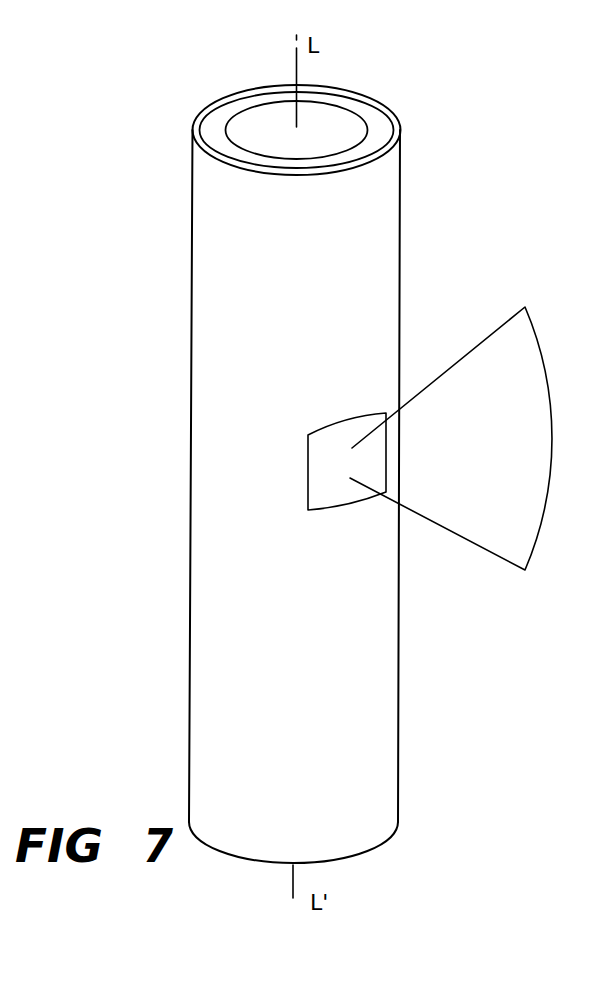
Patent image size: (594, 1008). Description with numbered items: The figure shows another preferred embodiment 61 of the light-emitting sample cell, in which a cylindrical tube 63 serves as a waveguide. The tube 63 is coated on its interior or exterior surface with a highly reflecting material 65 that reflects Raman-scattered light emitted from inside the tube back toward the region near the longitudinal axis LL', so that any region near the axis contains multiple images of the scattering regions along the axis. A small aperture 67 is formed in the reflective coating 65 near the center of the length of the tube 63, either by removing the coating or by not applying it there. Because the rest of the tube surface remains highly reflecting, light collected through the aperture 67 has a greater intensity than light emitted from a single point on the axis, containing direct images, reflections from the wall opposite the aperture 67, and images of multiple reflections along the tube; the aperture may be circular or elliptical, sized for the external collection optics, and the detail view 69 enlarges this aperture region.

The preferred embodiment 61 is at (351, 451).
The cylindrical tube 63 is at (347, 102).
The highly reflecting material 65 is at (402, 131).
The aperture 67 is at (330, 468).
The enlarged portion 69 is at (497, 365).